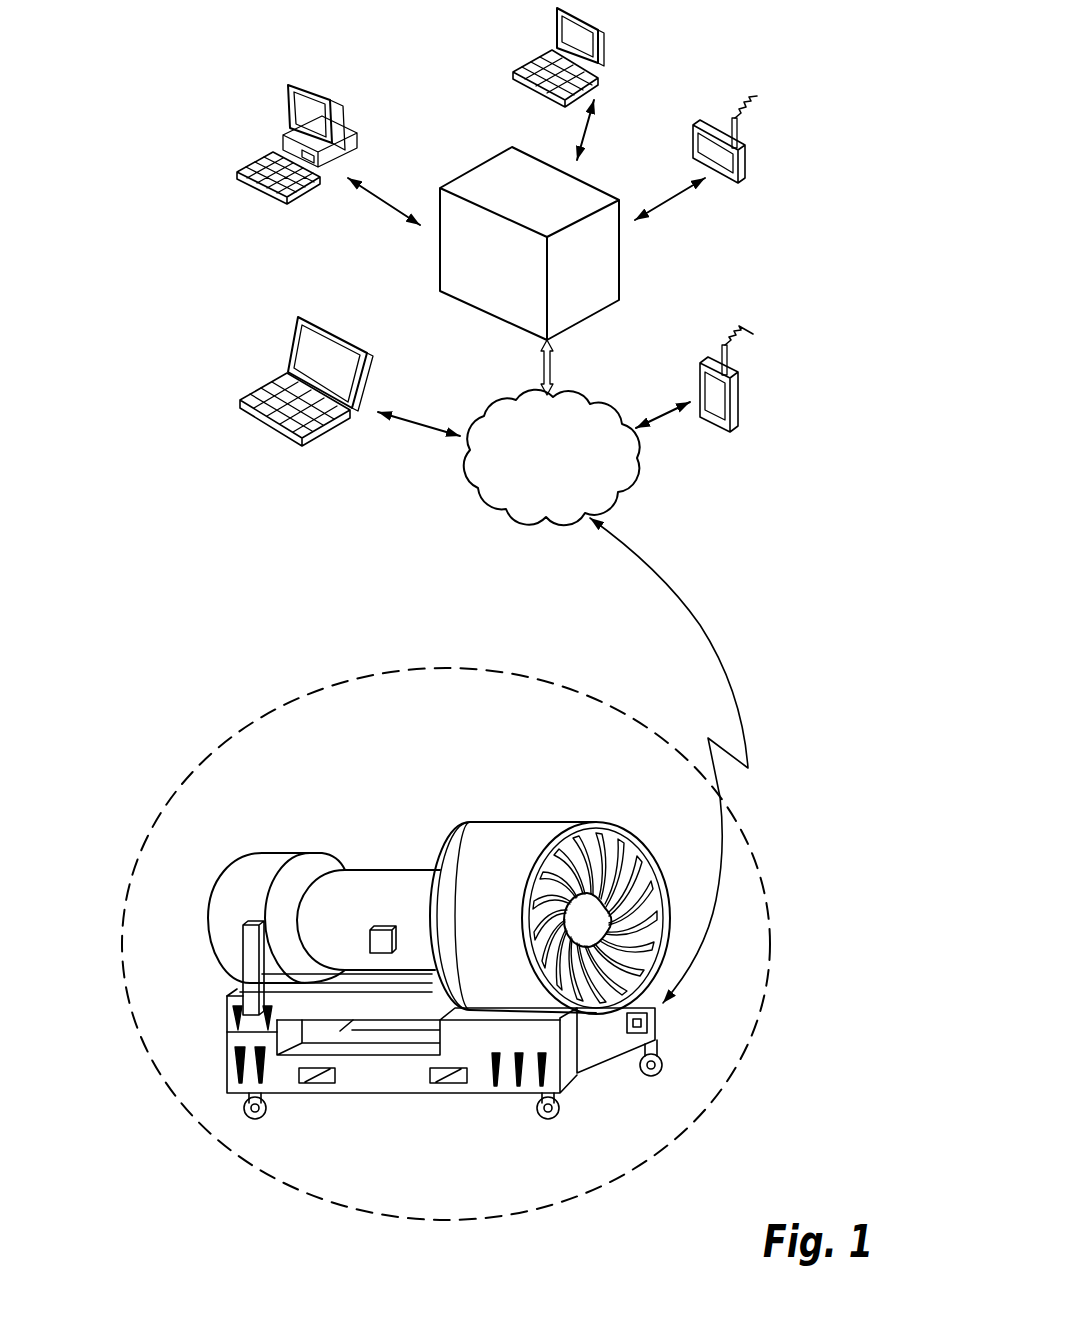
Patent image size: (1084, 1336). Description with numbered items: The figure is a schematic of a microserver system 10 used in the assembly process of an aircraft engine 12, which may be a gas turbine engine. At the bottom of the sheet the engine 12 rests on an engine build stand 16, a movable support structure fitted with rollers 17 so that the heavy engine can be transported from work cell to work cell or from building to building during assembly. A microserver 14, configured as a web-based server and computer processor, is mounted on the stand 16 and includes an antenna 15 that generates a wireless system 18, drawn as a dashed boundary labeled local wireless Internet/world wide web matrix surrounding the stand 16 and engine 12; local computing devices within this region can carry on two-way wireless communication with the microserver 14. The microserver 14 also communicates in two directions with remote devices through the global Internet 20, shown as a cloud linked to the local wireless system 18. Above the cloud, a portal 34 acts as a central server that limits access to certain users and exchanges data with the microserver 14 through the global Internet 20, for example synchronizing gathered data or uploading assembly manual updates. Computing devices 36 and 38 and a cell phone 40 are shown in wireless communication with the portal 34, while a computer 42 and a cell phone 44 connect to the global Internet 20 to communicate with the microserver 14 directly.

The microserver system 10 is at (165, 280).
The aircraft engine 12 is at (362, 883).
The microserver 14 is at (645, 1030).
The antenna 15 is at (648, 1023).
The engine build stand 16 is at (370, 1075).
The rollers 17 is at (265, 1118).
The wireless system 18 is at (233, 740).
The global Internet 20 is at (617, 473).
The portal 34 is at (510, 276).
The computing device 36 is at (270, 142).
The computing device 38 is at (600, 70).
The cell phone 40 is at (748, 165).
The computer 42 is at (257, 393).
The cell phone 44 is at (740, 398).